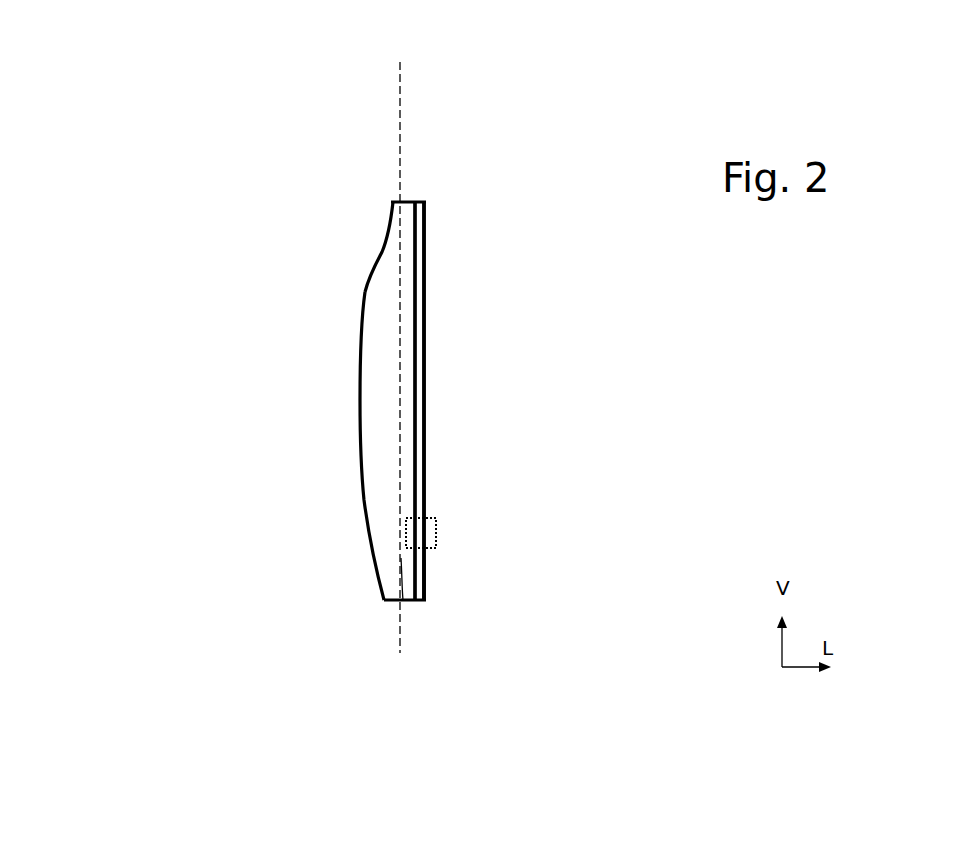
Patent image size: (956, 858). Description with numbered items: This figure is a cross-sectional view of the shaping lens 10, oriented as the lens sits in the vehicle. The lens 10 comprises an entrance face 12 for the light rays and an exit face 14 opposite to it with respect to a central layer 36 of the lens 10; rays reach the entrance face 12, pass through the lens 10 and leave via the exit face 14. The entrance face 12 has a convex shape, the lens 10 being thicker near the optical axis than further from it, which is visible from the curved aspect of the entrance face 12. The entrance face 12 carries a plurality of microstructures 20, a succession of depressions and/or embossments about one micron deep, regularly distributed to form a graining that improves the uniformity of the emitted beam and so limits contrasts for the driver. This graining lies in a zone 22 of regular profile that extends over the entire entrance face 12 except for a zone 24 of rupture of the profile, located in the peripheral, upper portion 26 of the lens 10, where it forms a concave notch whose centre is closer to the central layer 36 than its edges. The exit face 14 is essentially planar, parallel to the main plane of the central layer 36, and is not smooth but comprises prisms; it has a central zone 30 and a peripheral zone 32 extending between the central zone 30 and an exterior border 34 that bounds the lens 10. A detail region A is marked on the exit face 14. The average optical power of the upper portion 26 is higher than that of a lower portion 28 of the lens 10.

The shaping lens 10 is at (197, 586).
The entrance face 12 is at (393, 203).
The exit face 14 is at (426, 202).
The microstructures 20 is at (370, 282).
The zone of regular profile 22 is at (360, 393).
The zone of rupture of the profile 24 is at (383, 248).
The upper portion 26 is at (407, 235).
The lower portion 28 is at (383, 600).
The central zone 30 is at (425, 347).
The peripheral zone 32 is at (425, 215).
The exterior border 34 is at (425, 600).
The central layer 36 is at (403, 600).
The detail region A is at (437, 533).